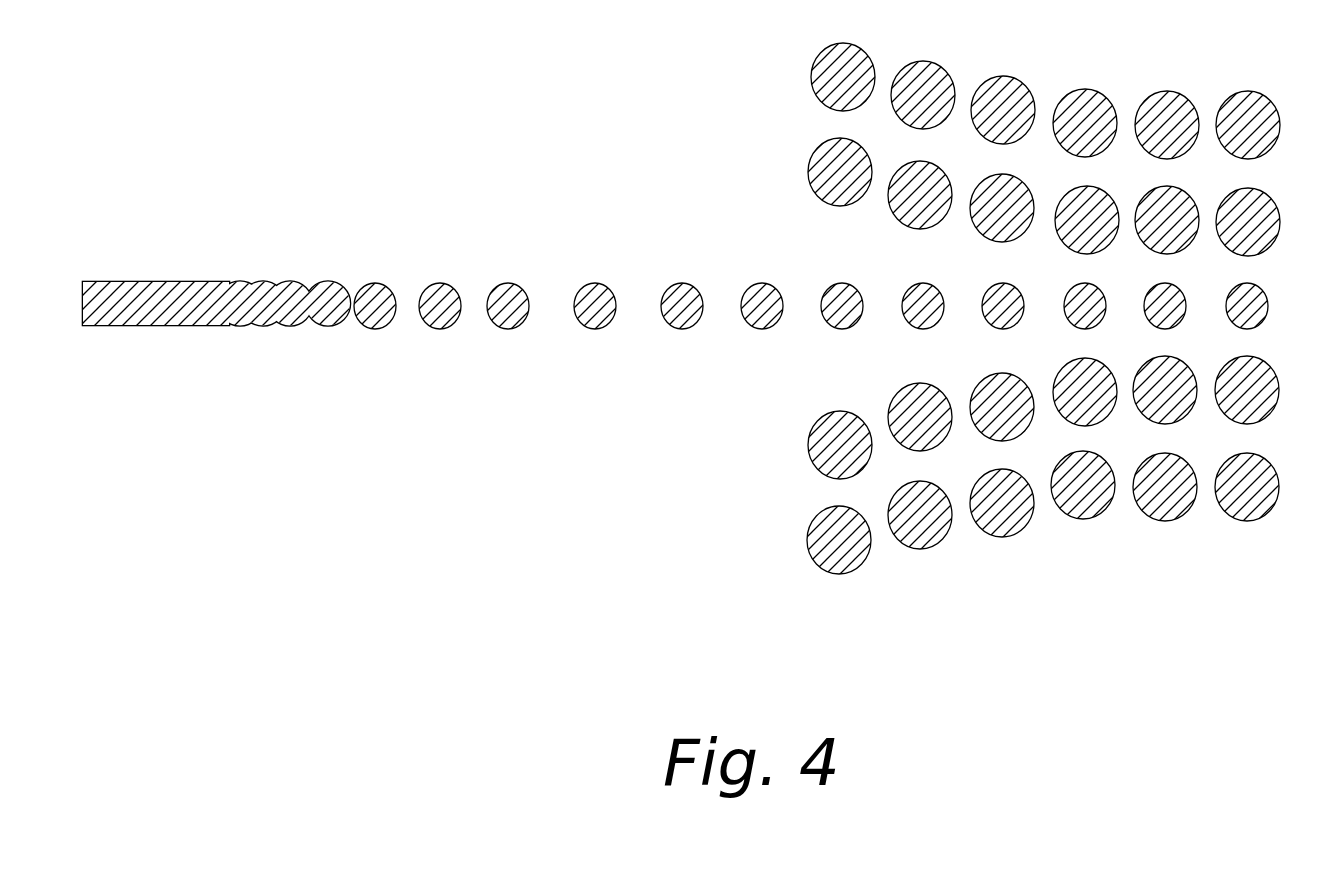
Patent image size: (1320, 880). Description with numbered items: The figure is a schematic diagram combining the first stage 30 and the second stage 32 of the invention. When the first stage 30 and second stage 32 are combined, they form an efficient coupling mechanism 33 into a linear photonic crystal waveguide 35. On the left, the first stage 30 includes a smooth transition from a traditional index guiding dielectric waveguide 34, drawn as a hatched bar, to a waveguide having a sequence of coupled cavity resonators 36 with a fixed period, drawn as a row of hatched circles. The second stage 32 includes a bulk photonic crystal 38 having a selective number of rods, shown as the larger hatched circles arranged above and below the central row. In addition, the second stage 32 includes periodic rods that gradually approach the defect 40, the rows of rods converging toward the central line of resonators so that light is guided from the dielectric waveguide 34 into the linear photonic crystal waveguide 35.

The first stage 30 is at (373, 433).
The second stage 32 is at (805, 575).
The coupling mechanism 33 is at (467, 583).
The index guiding dielectric waveguide 34 is at (471, 333).
The linear photonic crystal waveguide 35 is at (810, 121).
The coupled cavity resonators 36 is at (775, 333).
The bulk photonic crystal 38 is at (1273, 535).
The defect 40 is at (1037, 575).